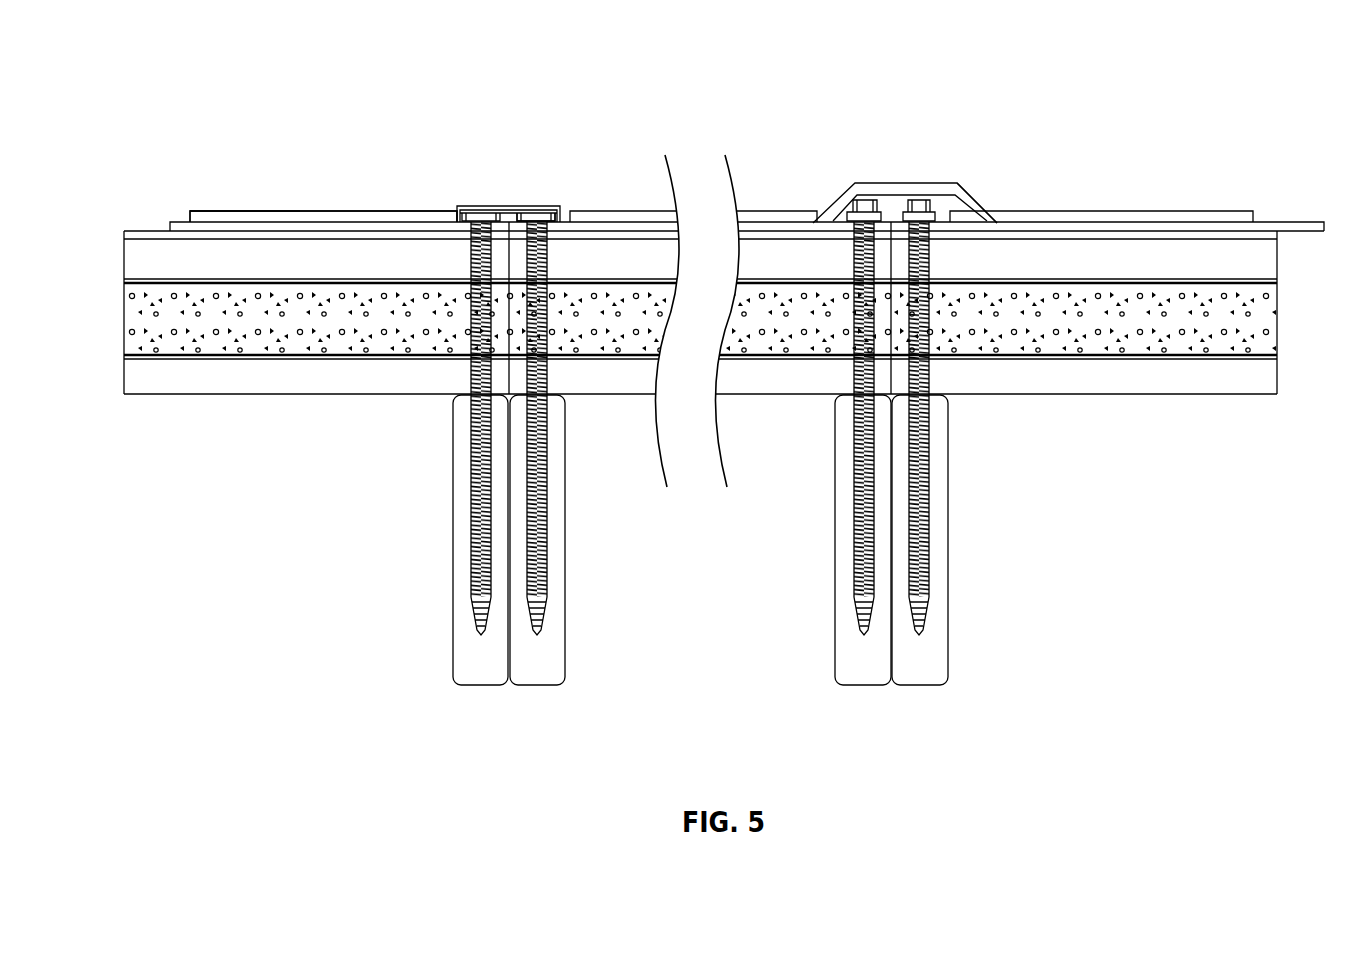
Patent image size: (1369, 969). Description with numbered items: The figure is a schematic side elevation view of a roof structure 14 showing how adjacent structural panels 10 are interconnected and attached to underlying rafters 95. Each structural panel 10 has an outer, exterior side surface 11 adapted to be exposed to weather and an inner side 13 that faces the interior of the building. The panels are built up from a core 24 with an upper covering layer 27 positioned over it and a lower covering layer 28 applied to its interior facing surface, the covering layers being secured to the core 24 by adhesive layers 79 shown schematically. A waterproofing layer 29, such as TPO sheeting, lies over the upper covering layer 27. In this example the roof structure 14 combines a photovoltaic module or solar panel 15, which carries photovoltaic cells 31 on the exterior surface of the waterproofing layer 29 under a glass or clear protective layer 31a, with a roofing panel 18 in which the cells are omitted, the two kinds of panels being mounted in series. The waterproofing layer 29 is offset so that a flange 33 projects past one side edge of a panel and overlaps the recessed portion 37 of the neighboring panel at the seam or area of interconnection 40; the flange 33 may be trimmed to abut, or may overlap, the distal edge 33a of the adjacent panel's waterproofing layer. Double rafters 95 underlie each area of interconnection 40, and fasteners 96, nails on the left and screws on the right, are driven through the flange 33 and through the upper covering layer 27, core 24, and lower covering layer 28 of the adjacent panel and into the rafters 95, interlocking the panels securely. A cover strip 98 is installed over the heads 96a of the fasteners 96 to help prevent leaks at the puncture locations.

The structural panel 10 is at (282, 138).
The outer, exterior side surface 11 is at (242, 210).
The inner side 13 is at (297, 395).
The roof structure 14 is at (232, 582).
The solar panel 15 is at (120, 380).
The roofing panel 18 is at (1287, 338).
The core 24 is at (138, 335).
The upper covering layer 27 is at (138, 262).
The lower covering layer 28 is at (235, 372).
The waterproofing layer 29 is at (184, 223).
The photovoltaic cells 31 is at (385, 213).
The protective layer 31a is at (257, 206).
The flange 33 is at (498, 206).
The distal edge 33a is at (520, 206).
The recessed portion 37 is at (137, 228).
The area of interconnection 40 is at (553, 200).
The adhesive layers 79 is at (138, 283).
The rafters 95 is at (517, 697).
The fasteners 96 is at (468, 310).
The heads 96a is at (862, 197).
The cover strip 98 is at (460, 206).